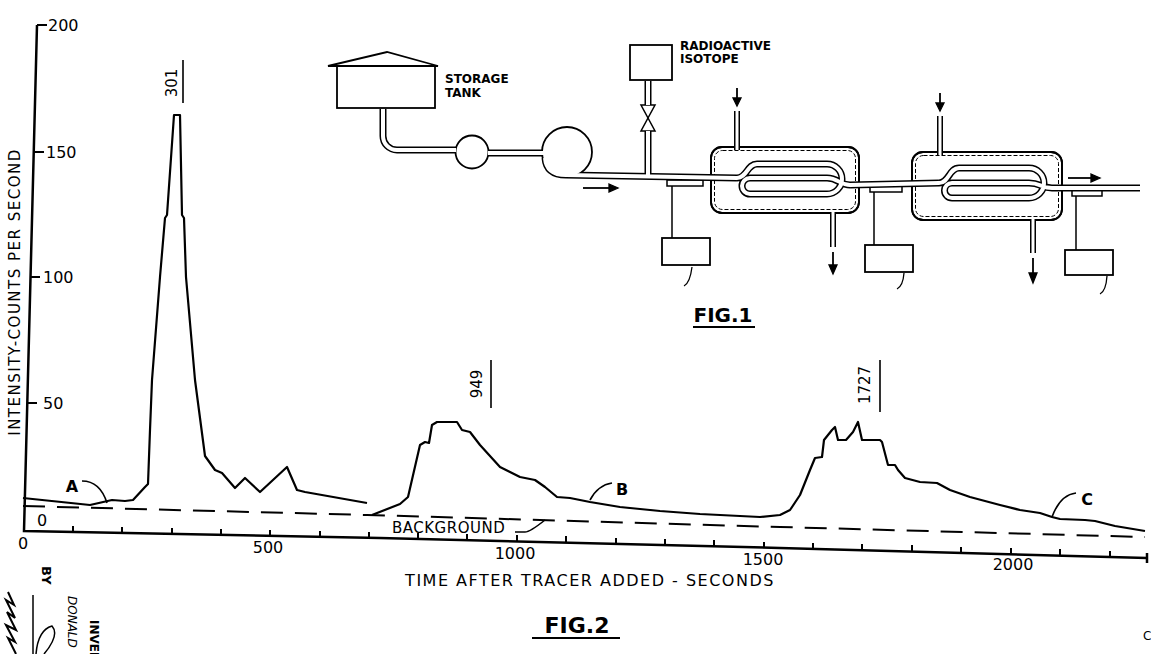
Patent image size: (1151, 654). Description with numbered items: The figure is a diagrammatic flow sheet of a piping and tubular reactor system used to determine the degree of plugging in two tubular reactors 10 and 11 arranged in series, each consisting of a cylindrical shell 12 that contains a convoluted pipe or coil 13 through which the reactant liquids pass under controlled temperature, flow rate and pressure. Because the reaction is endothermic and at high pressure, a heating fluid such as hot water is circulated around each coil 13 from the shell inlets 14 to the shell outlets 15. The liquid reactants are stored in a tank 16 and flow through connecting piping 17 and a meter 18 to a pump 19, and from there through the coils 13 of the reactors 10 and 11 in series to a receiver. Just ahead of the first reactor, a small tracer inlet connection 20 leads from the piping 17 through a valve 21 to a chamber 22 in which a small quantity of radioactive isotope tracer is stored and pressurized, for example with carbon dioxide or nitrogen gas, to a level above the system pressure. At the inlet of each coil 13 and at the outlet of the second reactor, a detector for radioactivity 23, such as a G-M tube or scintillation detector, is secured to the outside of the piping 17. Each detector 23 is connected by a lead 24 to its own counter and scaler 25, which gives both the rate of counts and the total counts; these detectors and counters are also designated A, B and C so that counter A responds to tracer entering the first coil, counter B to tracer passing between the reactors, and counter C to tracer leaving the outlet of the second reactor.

The tubular reactor 10 is at (785, 146).
The tubular reactor 11 is at (988, 151).
The cylindrical shell 12 is at (860, 152).
The convoluted pipe or coil 13 is at (790, 206).
The shell inlet 14 is at (740, 128).
The shell outlet 15 is at (830, 243).
The tank 16 is at (376, 91).
The connecting piping 17 is at (525, 160).
The meter 18 is at (480, 138).
The pump 19 is at (575, 130).
The tracer inlet connection 20 is at (653, 162).
The valve 21 is at (656, 124).
The chamber 22 is at (642, 71).
The detector for radioactivity 23 is at (675, 187).
The lead 24 is at (673, 232).
The counter and scaler 25 is at (710, 252).